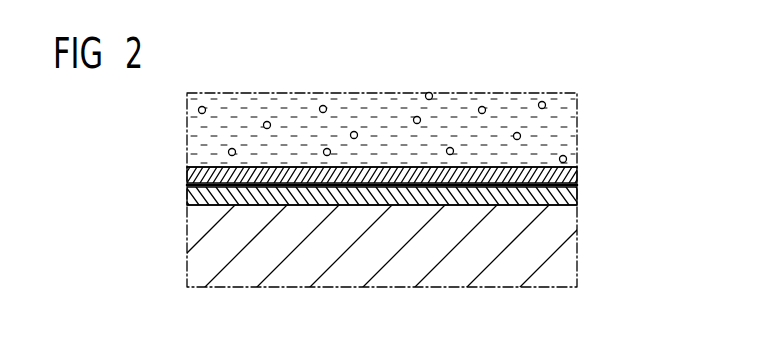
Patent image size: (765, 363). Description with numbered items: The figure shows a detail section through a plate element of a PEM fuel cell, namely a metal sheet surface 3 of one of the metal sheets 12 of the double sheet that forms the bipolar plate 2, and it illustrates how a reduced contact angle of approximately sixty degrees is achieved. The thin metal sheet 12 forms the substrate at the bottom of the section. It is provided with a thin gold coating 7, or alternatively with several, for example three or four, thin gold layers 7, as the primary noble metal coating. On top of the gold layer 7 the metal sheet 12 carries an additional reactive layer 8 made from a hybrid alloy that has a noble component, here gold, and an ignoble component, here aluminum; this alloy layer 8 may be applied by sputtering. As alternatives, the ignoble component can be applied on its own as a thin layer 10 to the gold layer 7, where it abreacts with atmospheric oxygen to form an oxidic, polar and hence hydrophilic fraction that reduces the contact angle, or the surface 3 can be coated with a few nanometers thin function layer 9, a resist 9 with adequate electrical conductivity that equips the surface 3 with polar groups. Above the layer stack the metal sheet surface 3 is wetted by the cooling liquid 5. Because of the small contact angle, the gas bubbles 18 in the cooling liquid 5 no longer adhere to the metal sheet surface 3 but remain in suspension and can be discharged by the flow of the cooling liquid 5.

The bipolar plate 2 is at (665, 218).
The metal sheet surface 3 is at (220, 166).
The cooling liquid 5 is at (561, 113).
The gold coating 7 is at (560, 195).
The reactive layer 8 is at (449, 155).
The function layer 9 is at (449, 155).
The thin layer of ignoble component 10 is at (560, 178).
The metal sheet 12 is at (555, 266).
The gas bubbles 18 is at (268, 122).